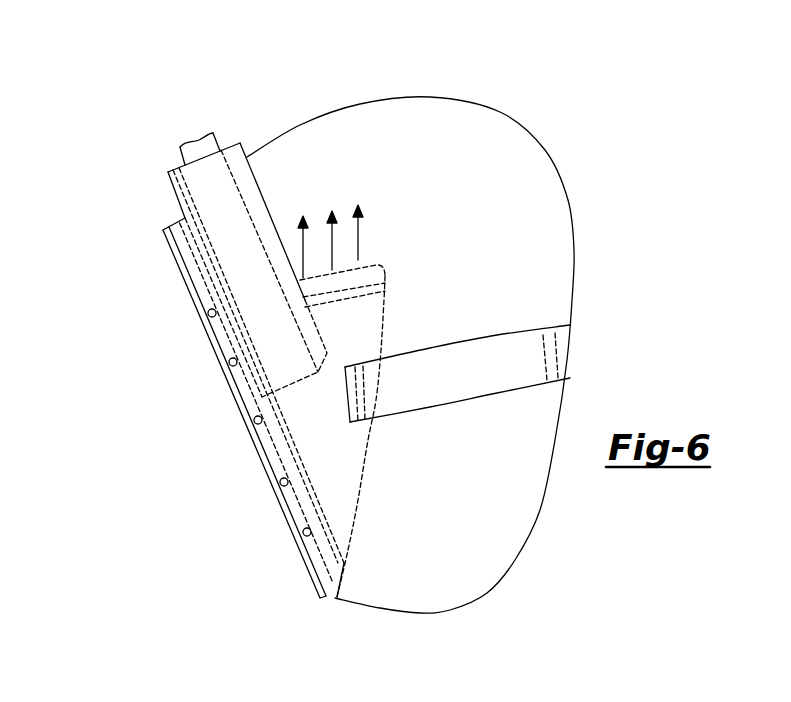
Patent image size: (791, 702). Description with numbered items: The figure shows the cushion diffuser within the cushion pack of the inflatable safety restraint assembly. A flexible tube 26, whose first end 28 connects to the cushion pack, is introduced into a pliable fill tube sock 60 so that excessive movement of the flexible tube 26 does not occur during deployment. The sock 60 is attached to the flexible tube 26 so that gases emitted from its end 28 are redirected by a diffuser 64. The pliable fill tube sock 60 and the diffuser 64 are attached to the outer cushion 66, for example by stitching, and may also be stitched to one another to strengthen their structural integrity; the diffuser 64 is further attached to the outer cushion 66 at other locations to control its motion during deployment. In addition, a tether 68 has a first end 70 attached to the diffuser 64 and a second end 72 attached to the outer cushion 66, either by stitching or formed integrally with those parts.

The flexible tube 26 is at (201, 148).
The first end of flexible tube 28 is at (228, 133).
The pliable fill tube sock 60 is at (222, 205).
The diffuser 64 is at (338, 480).
The outer cushion 66 is at (473, 570).
The tether 68 is at (527, 353).
The first end of tether 70 is at (358, 403).
The second end of tether 72 is at (572, 363).